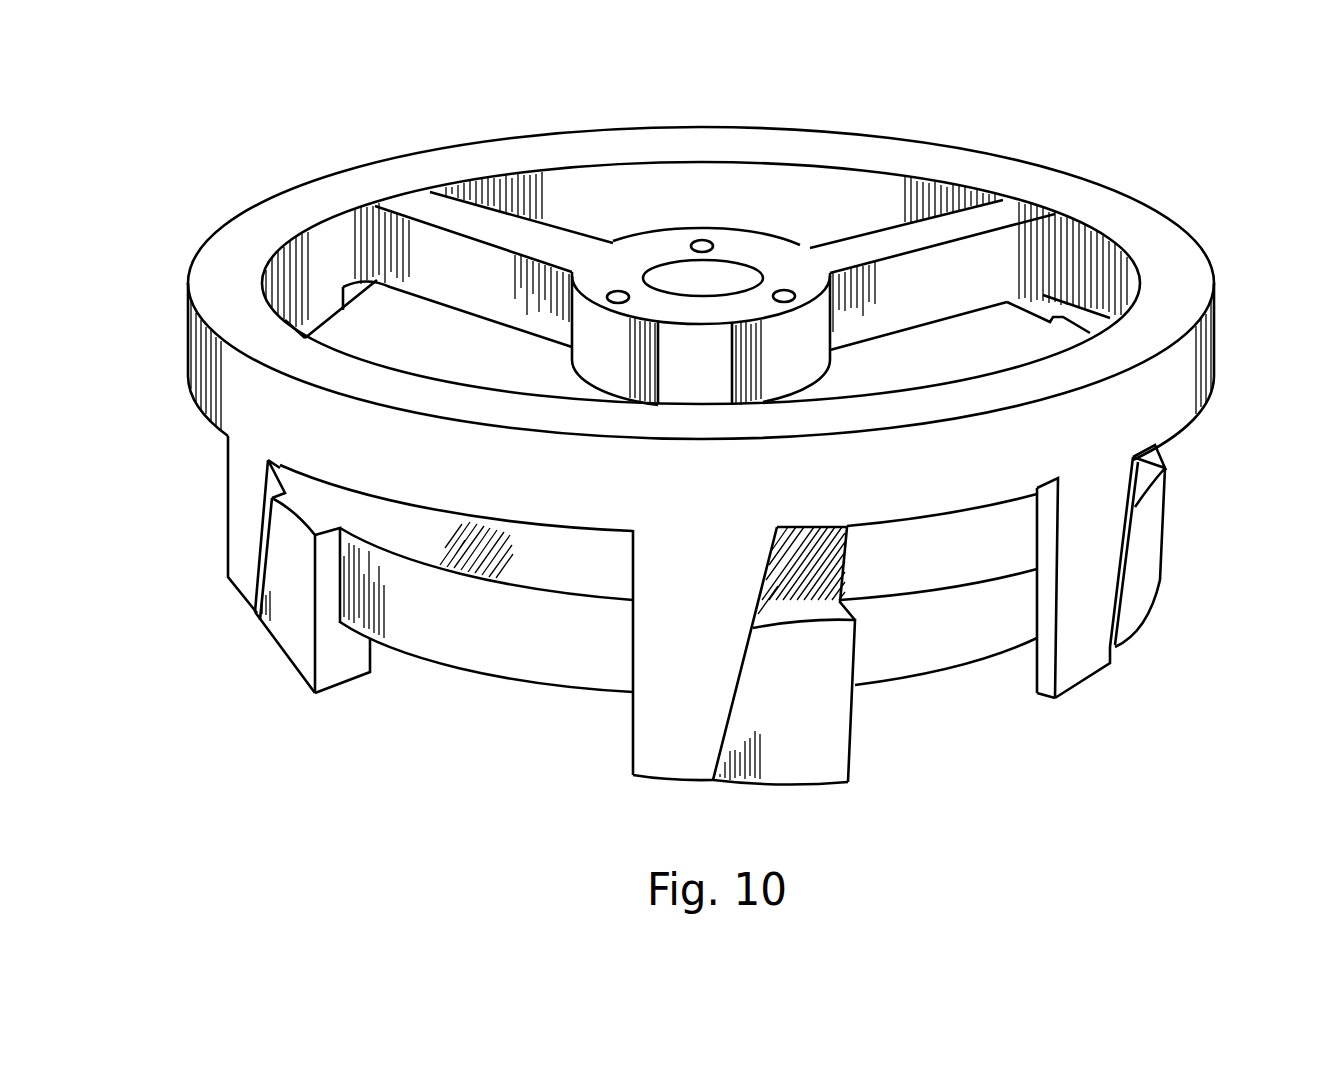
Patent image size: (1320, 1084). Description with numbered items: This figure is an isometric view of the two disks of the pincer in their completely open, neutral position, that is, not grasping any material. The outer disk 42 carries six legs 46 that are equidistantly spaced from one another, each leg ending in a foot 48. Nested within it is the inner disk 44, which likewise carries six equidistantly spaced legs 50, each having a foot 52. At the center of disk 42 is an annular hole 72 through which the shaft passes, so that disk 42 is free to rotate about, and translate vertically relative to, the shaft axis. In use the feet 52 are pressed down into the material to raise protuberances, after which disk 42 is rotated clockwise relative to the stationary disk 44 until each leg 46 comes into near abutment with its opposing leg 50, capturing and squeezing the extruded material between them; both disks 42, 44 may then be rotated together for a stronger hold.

The disk 42 is at (237, 214).
The disk 44 is at (917, 676).
The legs 46 is at (257, 505).
The foot 48 is at (240, 597).
The legs 50 is at (305, 577).
The foot 52 is at (300, 685).
The annular hole 72 is at (733, 262).